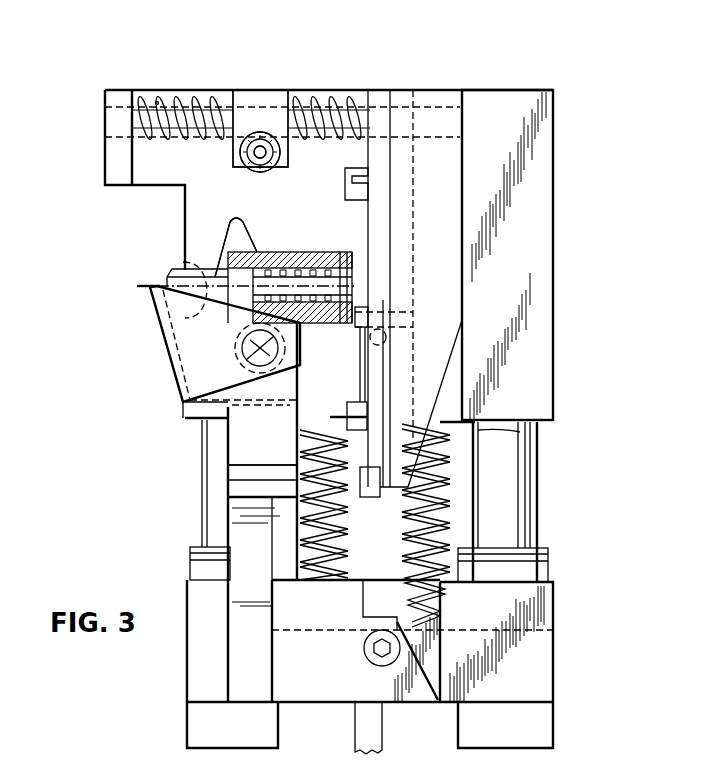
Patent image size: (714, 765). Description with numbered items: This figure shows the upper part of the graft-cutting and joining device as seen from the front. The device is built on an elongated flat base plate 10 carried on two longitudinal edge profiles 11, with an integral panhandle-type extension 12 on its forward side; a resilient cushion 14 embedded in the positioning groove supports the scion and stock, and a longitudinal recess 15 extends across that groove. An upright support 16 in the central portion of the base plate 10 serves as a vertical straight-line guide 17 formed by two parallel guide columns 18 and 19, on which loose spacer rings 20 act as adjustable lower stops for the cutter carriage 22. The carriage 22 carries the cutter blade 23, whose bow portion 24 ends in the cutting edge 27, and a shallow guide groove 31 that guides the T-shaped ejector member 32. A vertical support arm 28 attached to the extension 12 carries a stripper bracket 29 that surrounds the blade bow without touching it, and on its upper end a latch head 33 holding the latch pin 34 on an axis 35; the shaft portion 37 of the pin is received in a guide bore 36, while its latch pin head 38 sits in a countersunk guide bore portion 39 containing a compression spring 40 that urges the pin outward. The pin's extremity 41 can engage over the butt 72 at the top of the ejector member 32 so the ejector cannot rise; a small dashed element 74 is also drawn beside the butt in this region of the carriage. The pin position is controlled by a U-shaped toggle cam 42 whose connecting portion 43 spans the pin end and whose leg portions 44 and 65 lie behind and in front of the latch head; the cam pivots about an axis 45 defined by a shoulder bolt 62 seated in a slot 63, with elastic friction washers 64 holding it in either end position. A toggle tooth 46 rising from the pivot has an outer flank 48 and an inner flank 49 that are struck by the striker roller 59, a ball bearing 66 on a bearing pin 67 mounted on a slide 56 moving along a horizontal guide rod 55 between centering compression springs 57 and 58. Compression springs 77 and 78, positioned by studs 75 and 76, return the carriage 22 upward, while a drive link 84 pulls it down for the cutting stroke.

The base plate 10 is at (535, 652).
The longitudinal edge profiles 11 is at (205, 731).
The panhandle-type extension 12 is at (358, 690).
The resilient cushion 14 is at (365, 632).
The longitudinal recess 15 is at (393, 596).
The upright support 16 is at (561, 527).
The vertical straight-line guide 17 is at (538, 448).
The guide column 18 is at (215, 514).
The guide column 19 is at (535, 432).
The spacer rings 20 is at (190, 570).
The cutter carriage 22 is at (535, 212).
The cutter blade 23 is at (335, 464).
The bow portion 24 is at (285, 452).
The cutting edge 27 is at (265, 536).
The support arm 28 is at (262, 599).
The stripper bracket 29 is at (340, 491).
The guide groove 31 is at (403, 155).
The ejector member 32 is at (372, 326).
The latch head 33 is at (312, 250).
The latch pin 34 is at (355, 282).
The axis 35 is at (150, 288).
The guide bore 36 is at (350, 392).
The shaft portion 37 is at (330, 252).
The latch pin head 38 is at (180, 268).
The countersunk guide bore portion 39 is at (300, 250).
The compression spring 40 is at (274, 250).
The extremity 41 is at (355, 295).
The toggle cam 42 is at (215, 397).
The connecting portion 43 is at (190, 333).
The leg portion 44 is at (322, 358).
The pivot axis 45 is at (242, 358).
The toggle tooth 46 is at (236, 228).
The outer flank 48 is at (225, 242).
The inner flank 49 is at (248, 226).
The guide rod 55 is at (190, 112).
The slide 56 is at (245, 104).
The compression spring 57 is at (157, 100).
The compression spring 58 is at (332, 108).
The striker roller 59 is at (263, 138).
The shoulder bolt 62 is at (240, 382).
The slot 63 is at (255, 428).
The friction washers 64 is at (170, 378).
The leg portion 65 is at (190, 327).
The ball bearing 66 is at (242, 167).
The bearing pin 67 is at (253, 152).
The butt 72 is at (362, 308).
The latch pin 74 is at (386, 339).
The stud 75 is at (448, 512).
The stud 76 is at (300, 566).
The compression spring 77 is at (450, 478).
The compression spring 78 is at (312, 582).
The drive link 84 is at (372, 728).